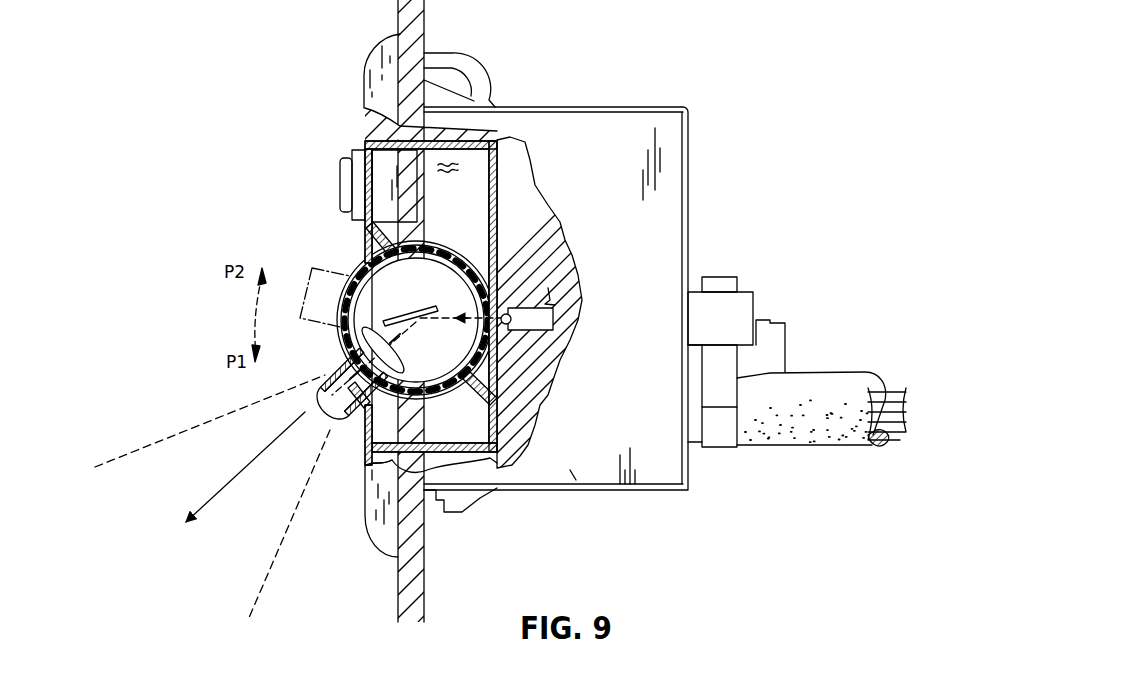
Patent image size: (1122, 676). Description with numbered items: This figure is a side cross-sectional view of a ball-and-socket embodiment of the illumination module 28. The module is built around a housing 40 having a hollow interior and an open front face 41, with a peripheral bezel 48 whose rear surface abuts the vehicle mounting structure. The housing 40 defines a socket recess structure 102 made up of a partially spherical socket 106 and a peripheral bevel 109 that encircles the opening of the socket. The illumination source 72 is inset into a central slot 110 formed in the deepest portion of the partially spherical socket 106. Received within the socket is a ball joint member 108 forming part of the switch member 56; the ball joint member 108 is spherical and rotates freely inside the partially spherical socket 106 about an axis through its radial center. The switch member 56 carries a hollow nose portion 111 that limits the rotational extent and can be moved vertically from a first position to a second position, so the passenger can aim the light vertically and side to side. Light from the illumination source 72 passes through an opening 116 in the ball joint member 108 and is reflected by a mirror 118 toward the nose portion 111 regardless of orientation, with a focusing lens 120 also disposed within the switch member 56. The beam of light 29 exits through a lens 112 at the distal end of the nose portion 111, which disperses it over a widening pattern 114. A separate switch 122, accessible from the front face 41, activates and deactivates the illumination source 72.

The illumination module 28 is at (628, 50).
The beam of light 29 is at (228, 484).
The housing 40 is at (572, 480).
The front face 41 is at (356, 139).
The peripheral bezel 48 is at (357, 548).
The switch member 56 is at (365, 262).
The illumination source 72 is at (545, 323).
The socket recess structure 102 is at (475, 467).
The partially spherical socket 106 is at (478, 252).
The ball joint member 108 is at (488, 378).
The peripheral bevel 109 is at (372, 232).
The central slot 110 is at (505, 343).
The nose portion 111 is at (337, 356).
The lens 112 is at (312, 394).
The widening pattern 114 is at (263, 585).
The opening 116 is at (478, 278).
The mirror 118 is at (414, 311).
The focusing lens 120 is at (395, 361).
The switch 122 is at (339, 170).